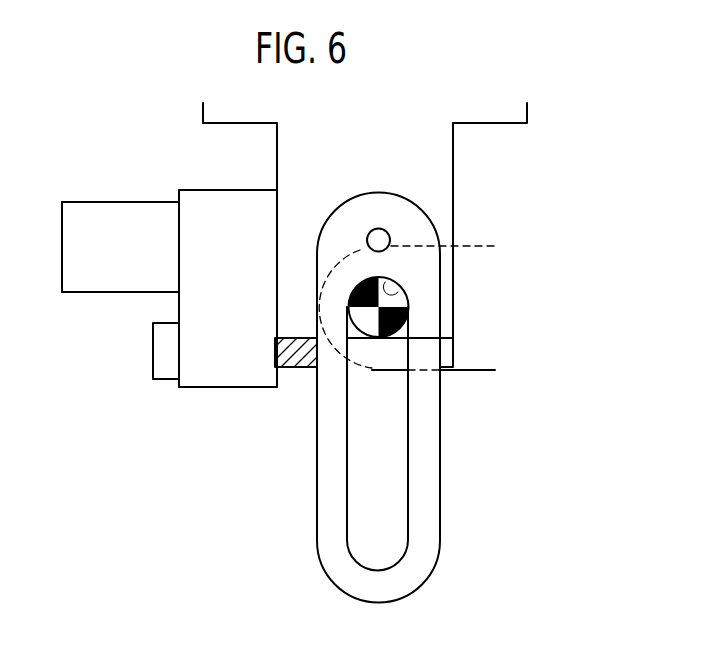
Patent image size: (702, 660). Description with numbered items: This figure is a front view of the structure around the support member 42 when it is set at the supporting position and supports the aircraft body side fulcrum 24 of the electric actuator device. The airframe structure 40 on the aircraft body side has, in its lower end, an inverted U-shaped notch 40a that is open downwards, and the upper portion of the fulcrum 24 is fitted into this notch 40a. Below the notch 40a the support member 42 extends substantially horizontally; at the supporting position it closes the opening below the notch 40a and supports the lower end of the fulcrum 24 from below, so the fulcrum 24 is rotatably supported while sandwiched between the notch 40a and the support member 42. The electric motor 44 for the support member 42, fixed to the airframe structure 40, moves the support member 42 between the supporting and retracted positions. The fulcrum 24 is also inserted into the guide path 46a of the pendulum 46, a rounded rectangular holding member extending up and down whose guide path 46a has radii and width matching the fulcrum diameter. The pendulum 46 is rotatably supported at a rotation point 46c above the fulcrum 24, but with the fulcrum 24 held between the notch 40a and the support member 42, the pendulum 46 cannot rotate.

The aircraft body side fulcrum 24 is at (405, 327).
The airframe structure 40 is at (453, 182).
The notch 40a is at (392, 283).
The support member 42 is at (293, 370).
The electric motor for the support member 44 is at (117, 202).
The pendulum (holding member) 46 is at (316, 542).
The guide path 46a is at (380, 527).
The rotation point 46c is at (378, 229).